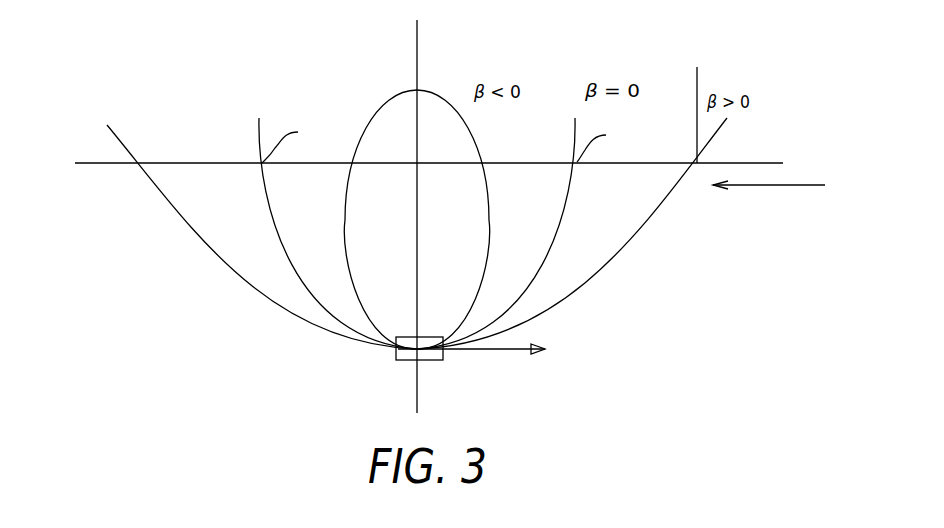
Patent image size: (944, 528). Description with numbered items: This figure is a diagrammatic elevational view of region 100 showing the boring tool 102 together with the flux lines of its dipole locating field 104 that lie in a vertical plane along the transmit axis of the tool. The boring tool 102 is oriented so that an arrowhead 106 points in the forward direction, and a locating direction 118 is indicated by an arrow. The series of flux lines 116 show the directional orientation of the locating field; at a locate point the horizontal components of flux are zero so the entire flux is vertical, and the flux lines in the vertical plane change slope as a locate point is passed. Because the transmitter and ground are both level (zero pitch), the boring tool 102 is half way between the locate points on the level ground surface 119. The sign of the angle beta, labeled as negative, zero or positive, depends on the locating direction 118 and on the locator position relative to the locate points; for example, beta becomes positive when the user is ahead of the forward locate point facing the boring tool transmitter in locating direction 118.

The region 100 is at (692, 337).
The boring tool 102 is at (437, 361).
The dipole locating field 104 is at (260, 133).
The arrowhead 106 is at (513, 350).
The flux lines 116 is at (282, 252).
The locating direction 118 is at (778, 185).
The level ground surface 119 is at (90, 163).